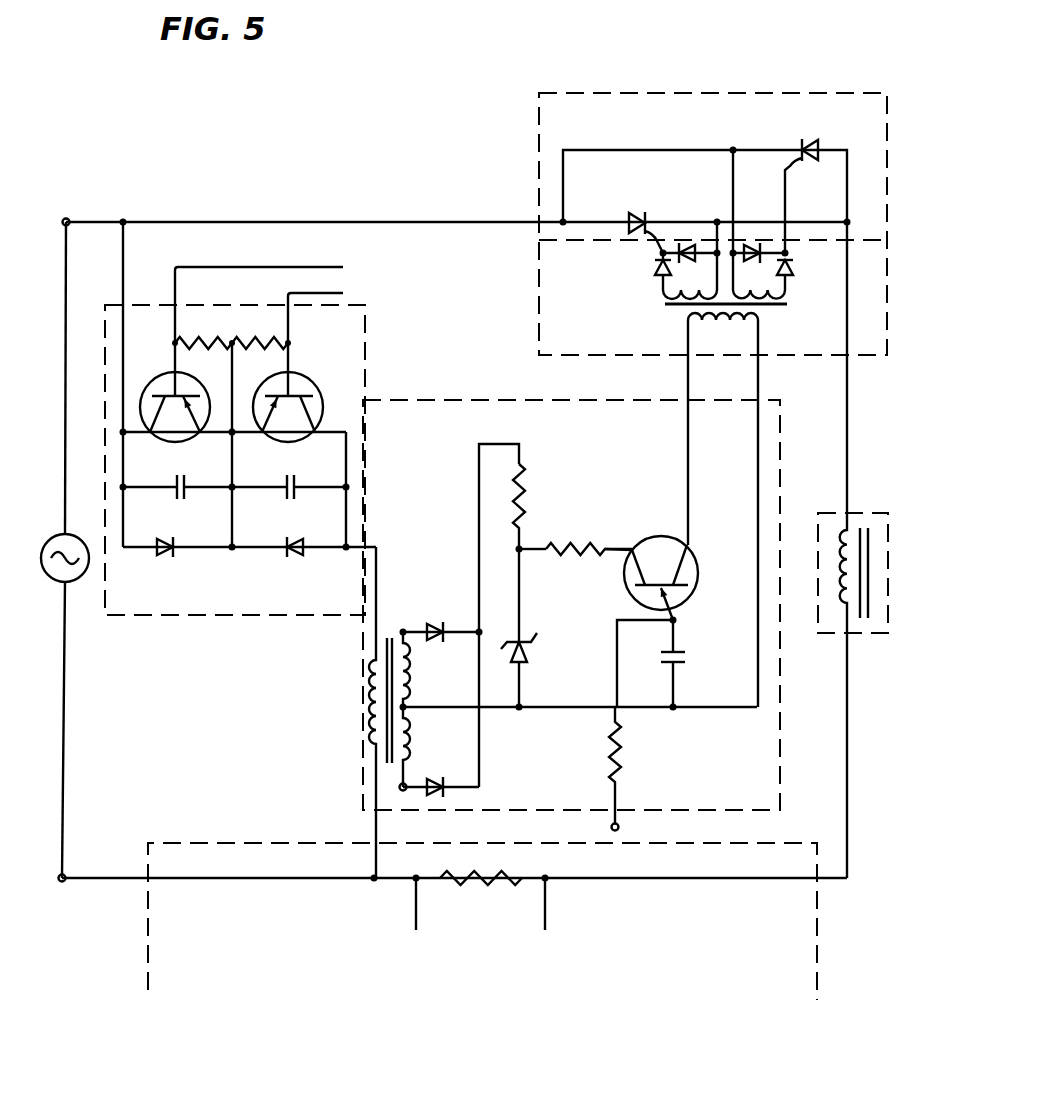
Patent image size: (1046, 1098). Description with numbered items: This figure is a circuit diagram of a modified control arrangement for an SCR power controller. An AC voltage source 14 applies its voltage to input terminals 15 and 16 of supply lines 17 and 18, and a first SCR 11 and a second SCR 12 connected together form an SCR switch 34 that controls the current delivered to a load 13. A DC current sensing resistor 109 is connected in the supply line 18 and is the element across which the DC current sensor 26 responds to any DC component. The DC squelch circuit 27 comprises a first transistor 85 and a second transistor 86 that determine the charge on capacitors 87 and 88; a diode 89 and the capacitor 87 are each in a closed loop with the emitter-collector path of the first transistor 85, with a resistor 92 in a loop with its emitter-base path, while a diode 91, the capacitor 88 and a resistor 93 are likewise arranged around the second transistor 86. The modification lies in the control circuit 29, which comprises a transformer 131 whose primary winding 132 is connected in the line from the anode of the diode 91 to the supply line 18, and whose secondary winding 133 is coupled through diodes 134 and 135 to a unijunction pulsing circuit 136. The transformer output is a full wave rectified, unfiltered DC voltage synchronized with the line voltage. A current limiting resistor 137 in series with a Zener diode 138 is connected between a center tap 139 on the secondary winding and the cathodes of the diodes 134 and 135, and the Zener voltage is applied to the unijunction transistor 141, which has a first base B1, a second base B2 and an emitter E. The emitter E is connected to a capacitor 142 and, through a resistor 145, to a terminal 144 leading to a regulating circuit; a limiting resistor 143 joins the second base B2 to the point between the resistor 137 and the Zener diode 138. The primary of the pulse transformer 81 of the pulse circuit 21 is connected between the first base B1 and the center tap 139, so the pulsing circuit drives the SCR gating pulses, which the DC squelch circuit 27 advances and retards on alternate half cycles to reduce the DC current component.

The first SCR 11 is at (634, 216).
The second SCR 12 is at (813, 140).
The load 13 is at (862, 634).
The AC voltage source 14 is at (52, 540).
The input terminal 15 is at (67, 219).
The input terminal 16 is at (64, 883).
The line 17 is at (188, 210).
The line 18 is at (94, 877).
The pulse circuit 21 is at (557, 283).
The DC current sensor 26 is at (640, 972).
The DC squelch circuit 27 is at (128, 620).
The control circuit 29 is at (398, 402).
The SCR switch 34 is at (748, 52).
The pulse transformer 81 is at (703, 428).
The first transistor 85 is at (161, 388).
The second transistor 86 is at (299, 388).
The capacitor 87 is at (181, 484).
The capacitor 88 is at (288, 484).
The diode 89 is at (173, 556).
The diode 91 is at (301, 556).
The resistor 92 is at (208, 342).
The resistor 93 is at (261, 342).
The DC current sensing resistor 109 is at (490, 878).
The transformer 131 is at (391, 796).
The primary winding 132 is at (368, 712).
The secondary winding 133 is at (412, 672).
The diode 134 is at (434, 621).
The diode 135 is at (434, 777).
The unijunction pulsing circuit 136 is at (531, 615).
The current limiting resistor 137 is at (522, 498).
The Zener diode 138 is at (529, 657).
The center tap 139 is at (405, 707).
The unijunction transistor 141 is at (665, 540).
The capacitor 142 is at (685, 657).
The limiting resistor 143 is at (577, 545).
The terminal 144 is at (619, 827).
The resistor 145 is at (621, 751).
The first base B1 is at (704, 436).
The second base B2 is at (615, 563).
The emitter E is at (656, 660).